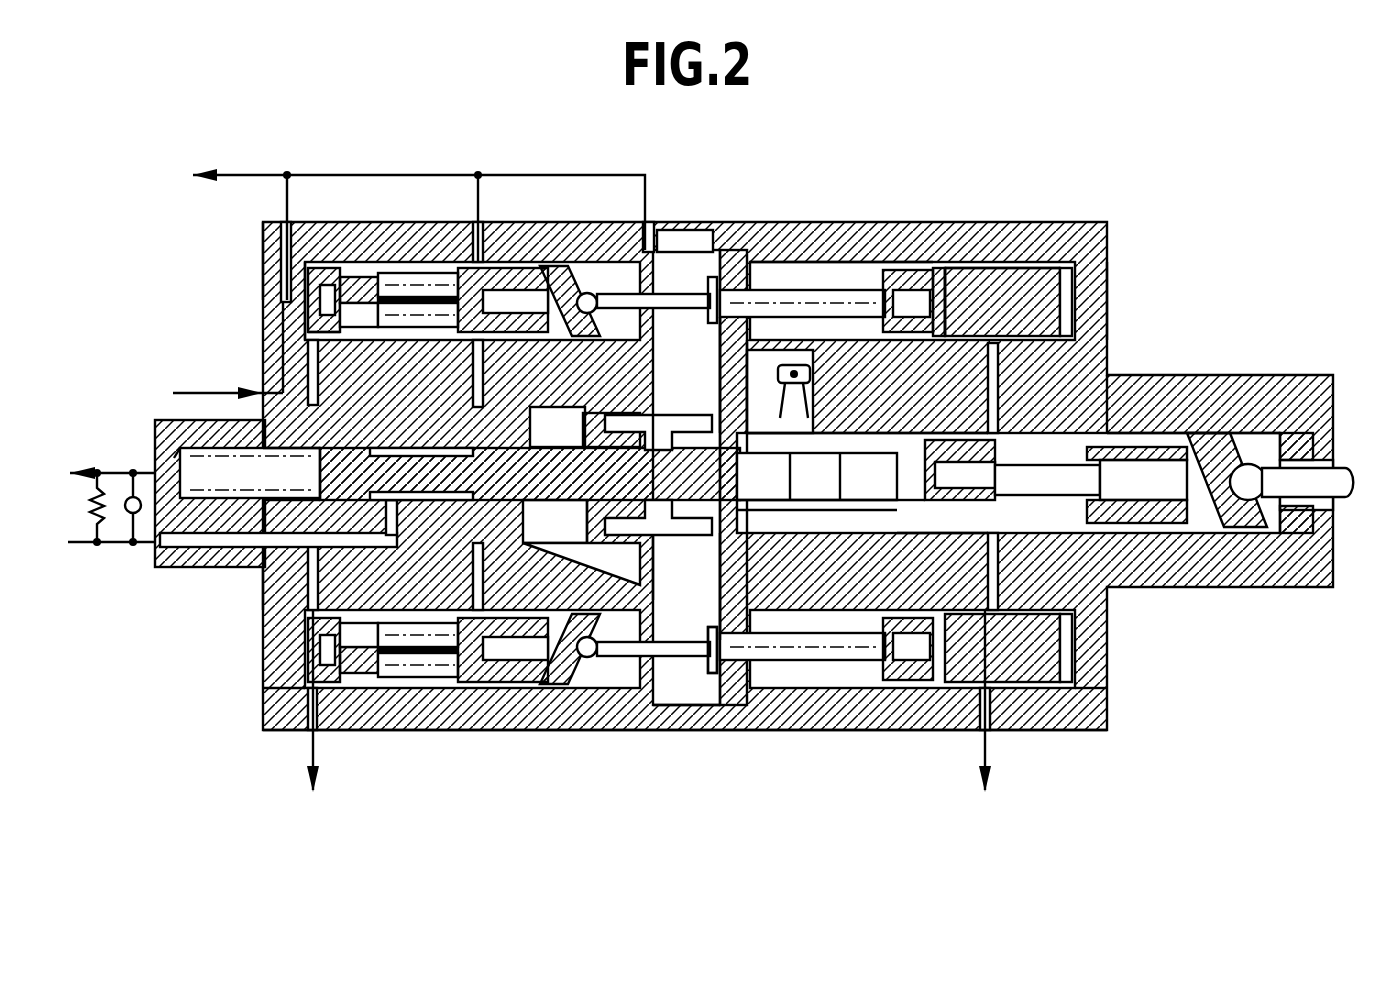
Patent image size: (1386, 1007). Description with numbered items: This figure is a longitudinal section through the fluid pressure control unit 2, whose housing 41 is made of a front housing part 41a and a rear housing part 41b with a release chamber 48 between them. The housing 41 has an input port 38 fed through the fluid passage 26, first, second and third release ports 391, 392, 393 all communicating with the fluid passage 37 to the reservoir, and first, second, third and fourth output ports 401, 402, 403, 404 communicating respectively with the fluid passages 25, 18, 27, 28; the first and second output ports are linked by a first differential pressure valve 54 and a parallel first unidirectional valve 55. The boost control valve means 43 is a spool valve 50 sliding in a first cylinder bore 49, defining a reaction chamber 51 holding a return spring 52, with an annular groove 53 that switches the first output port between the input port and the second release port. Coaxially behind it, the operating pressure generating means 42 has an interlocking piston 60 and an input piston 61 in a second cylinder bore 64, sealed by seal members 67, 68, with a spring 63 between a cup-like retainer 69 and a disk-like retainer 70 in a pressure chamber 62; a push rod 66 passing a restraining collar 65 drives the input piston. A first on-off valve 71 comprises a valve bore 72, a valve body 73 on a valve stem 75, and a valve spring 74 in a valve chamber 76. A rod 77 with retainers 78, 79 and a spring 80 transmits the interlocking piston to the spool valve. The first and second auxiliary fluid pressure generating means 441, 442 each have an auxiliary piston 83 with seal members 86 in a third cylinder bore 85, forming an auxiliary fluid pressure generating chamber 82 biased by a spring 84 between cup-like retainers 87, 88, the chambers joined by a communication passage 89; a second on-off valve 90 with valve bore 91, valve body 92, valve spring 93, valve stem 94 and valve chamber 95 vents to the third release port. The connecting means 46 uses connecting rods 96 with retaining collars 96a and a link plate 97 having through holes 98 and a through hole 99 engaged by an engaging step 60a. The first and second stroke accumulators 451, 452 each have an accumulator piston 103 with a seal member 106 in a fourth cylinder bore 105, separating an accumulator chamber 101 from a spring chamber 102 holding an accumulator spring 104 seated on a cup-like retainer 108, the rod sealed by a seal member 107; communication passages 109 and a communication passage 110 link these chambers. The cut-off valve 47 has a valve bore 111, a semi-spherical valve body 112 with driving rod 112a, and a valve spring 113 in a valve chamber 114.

The fluid pressure control unit 2 is at (703, 735).
The fluid passage 18 is at (117, 467).
The fluid passage 25 is at (110, 548).
The fluid passage 26 is at (188, 392).
The fluid passage 27 is at (308, 752).
The fluid passage 28 is at (988, 752).
The fluid passage 37 is at (334, 175).
The input port 38 is at (297, 407).
The first release port 391 is at (649, 222).
The second release port 392 is at (480, 262).
The third release port 393 is at (283, 240).
The first output port 401 is at (200, 500).
The second output port 402 is at (157, 450).
The third output port 403 is at (322, 708).
The fourth output port 404 is at (977, 697).
The housing 41 is at (665, 715).
The front housing part 41a is at (520, 713).
The rear housing part 41b is at (1063, 715).
The operating pressure generating means 42 is at (1090, 375).
The boost control valve means 43 is at (465, 515).
The first auxiliary fluid pressure generating means 441 is at (402, 275).
The second auxiliary fluid pressure generating means 442 is at (432, 690).
The first stroke accumulator 451 is at (893, 262).
The second stroke accumulator 452 is at (810, 720).
The connecting means 46 is at (733, 250).
The cut-off valve 47 is at (820, 383).
The release chamber 48 is at (658, 695).
The first cylinder bore 49 is at (425, 447).
The spool valve 50 is at (600, 460).
The reaction chamber 51 is at (230, 480).
The return spring 52 is at (185, 455).
The annular groove 53 is at (440, 508).
The first differential pressure valve 54 is at (97, 542).
The first unidirectional valve 55 is at (134, 547).
The interlocking piston 60 is at (720, 580).
The engaging step 60a is at (712, 562).
The input piston 61 is at (1205, 525).
The pressure chamber 62 is at (1075, 515).
The spring 63 is at (1140, 433).
The second cylinder bore 64 is at (912, 420).
The restraining collar 65 is at (1305, 455).
The push rod 66 is at (1313, 505).
The seal members 67 is at (1195, 440).
The seal member 68 is at (925, 522).
The cup-like retainer 69 is at (1123, 512).
The disk-like retainer 70 is at (1000, 464).
The first on-off valve 71 is at (858, 522).
The valve bore 72 is at (805, 527).
The valve body 73 is at (895, 522).
The valve spring 74 is at (1013, 478).
The valve stem 75 is at (1150, 500).
The valve chamber 76 is at (905, 500).
The rod 77 is at (590, 505).
The retainer 78 is at (600, 520).
The retainer 79 is at (690, 520).
The spring 80 is at (615, 525).
The auxiliary fluid pressure generating chamber 82 is at (470, 285).
The auxiliary piston 83 is at (650, 425).
The spring 84 is at (535, 465).
The third cylinder bore 85 is at (400, 273).
The seal members 86 is at (587, 293).
The cup-like retainer 87 is at (350, 277).
The cup-like retainer 88 is at (555, 266).
The communication passage 89 is at (300, 595).
The second on-off valve 90 is at (300, 262).
The valve bore 91 is at (318, 300).
The valve body 92 is at (313, 308).
The valve spring 93 is at (312, 280).
The valve stem 94 is at (462, 270).
The valve chamber 95 is at (285, 240).
The connecting rods 96 is at (806, 265).
The retaining collars 96a is at (700, 235).
The link plate 97 is at (722, 330).
The through holes 98 is at (708, 285).
The through hole 99 is at (675, 422).
The accumulator chamber 101 is at (1098, 280).
The spring chamber 102 is at (868, 262).
The accumulator piston 103 is at (1017, 275).
The accumulator spring 104 is at (948, 268).
The fourth cylinder bore 105 is at (990, 268).
The seal member 106 is at (928, 262).
The seal member 107 is at (775, 290).
The cup-like retainer 108 is at (845, 275).
The communication passages 109 is at (940, 672).
The communication passage 110 is at (707, 607).
The valve bore 111 is at (750, 342).
The semi-spherical valve body 112 is at (750, 500).
The driving rod 112a is at (778, 372).
The valve spring 113 is at (812, 500).
The valve chamber 114 is at (812, 372).